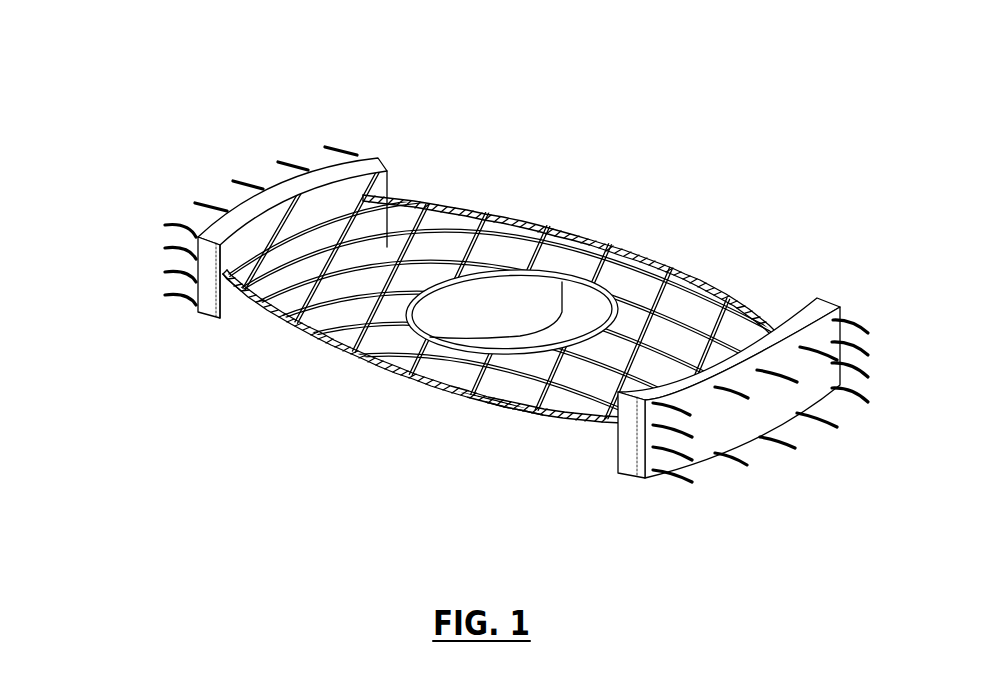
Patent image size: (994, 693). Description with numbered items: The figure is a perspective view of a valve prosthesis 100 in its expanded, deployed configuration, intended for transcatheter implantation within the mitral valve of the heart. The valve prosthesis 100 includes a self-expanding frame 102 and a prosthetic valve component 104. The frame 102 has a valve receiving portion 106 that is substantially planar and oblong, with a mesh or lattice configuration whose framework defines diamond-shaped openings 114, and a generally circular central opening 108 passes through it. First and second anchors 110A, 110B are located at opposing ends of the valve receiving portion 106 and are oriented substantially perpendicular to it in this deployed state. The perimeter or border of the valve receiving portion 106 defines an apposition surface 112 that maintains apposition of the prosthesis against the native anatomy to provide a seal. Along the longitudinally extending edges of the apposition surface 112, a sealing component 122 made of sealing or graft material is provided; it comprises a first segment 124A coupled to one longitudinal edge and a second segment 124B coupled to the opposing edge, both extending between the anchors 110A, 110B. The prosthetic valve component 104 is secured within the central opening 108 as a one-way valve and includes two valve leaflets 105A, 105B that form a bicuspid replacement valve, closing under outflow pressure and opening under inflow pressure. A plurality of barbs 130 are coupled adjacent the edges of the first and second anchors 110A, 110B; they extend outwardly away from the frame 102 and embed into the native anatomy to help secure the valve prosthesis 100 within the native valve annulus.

The valve prosthesis 100 is at (491, 259).
The self-expanding frame 102 is at (534, 284).
The prosthetic valve component 104 is at (579, 319).
The valve leaflet 105A is at (510, 298).
The valve leaflet 105B is at (590, 310).
The valve receiving portion 106 is at (290, 305).
The central opening 108 is at (517, 403).
The first anchor 110A is at (273, 190).
The second anchor 110B is at (730, 433).
The apposition surface 112 is at (228, 289).
The diamond-shaped openings 114 is at (347, 322).
The sealing component 122 is at (522, 303).
The first segment 124A is at (590, 232).
The second segment 124B is at (418, 380).
The barbs 130 is at (534, 296).